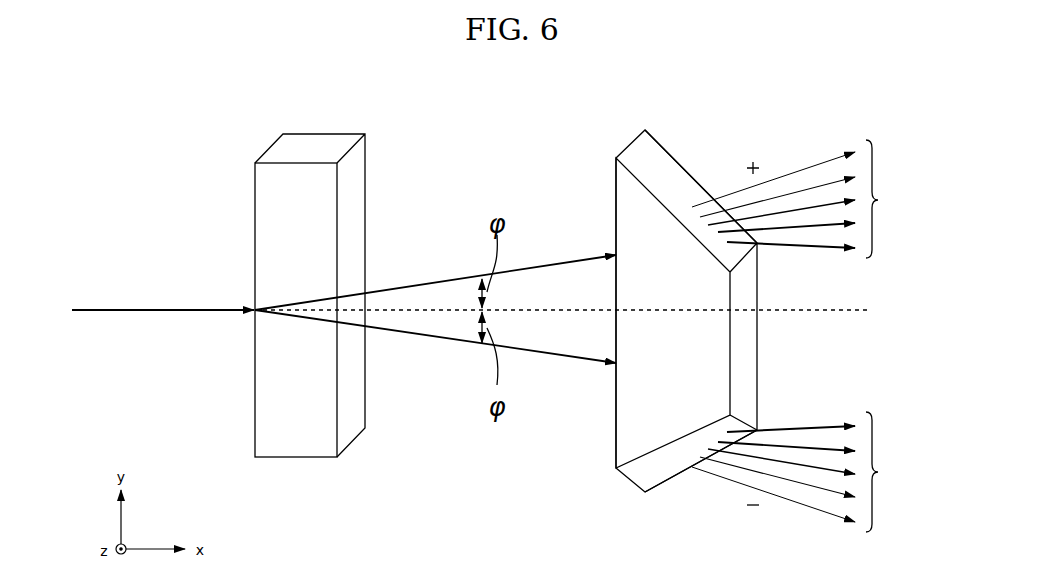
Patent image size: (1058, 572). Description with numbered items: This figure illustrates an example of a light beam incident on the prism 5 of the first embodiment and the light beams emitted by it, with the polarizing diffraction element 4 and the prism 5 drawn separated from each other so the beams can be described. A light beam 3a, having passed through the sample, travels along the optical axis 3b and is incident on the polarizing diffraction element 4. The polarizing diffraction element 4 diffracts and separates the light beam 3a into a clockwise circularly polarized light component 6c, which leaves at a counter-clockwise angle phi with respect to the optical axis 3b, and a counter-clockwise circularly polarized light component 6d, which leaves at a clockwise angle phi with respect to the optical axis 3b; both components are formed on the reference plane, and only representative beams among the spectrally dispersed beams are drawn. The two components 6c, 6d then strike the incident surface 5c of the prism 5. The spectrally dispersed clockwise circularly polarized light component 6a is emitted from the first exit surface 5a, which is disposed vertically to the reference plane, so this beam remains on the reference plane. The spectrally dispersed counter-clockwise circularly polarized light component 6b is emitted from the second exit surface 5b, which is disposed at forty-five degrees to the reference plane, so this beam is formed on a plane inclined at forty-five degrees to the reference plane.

The light beam 3a is at (170, 308).
The optical axis 3b is at (553, 307).
The polarizing diffraction element 4 is at (308, 150).
The prism 5 is at (640, 323).
The first exit surface 5a is at (667, 168).
The second exit surface 5b is at (672, 463).
The incident surface 5c is at (617, 208).
The spectrally dispersed clockwise circularly polarized light component 6a is at (803, 199).
The spectrally dispersed counter-clockwise circularly polarized light component 6b is at (803, 472).
The clockwise circularly polarized light component 6c is at (408, 285).
The counter-clockwise circularly polarized light component 6d is at (423, 340).